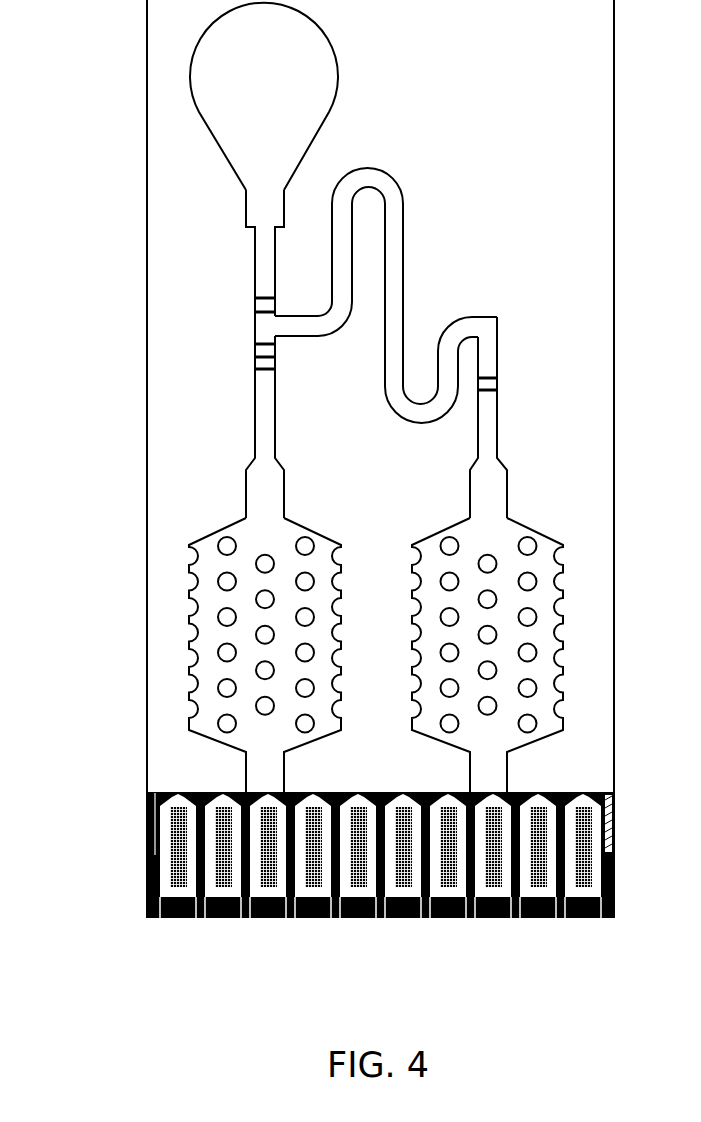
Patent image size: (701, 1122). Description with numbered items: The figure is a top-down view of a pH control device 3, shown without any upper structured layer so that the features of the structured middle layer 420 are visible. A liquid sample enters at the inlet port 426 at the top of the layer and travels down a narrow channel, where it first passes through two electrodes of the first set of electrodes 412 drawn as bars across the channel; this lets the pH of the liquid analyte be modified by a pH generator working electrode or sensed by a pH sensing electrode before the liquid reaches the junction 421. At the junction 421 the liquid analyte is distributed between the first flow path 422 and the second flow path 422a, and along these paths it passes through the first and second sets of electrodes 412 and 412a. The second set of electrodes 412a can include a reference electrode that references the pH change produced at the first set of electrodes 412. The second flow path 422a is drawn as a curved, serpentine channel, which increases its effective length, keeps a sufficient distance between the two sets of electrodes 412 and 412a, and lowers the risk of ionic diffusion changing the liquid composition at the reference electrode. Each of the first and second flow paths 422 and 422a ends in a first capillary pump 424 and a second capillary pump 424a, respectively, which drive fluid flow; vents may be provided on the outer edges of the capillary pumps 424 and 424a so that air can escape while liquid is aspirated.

The pH control device 3 is at (156, 970).
The structured middle layer 420 is at (157, 692).
The inlet port 426 is at (210, 101).
The first set of electrodes 412 is at (250, 290).
The second set of electrodes 412a is at (498, 368).
The junction 421 is at (270, 323).
The first flow path 422 is at (267, 415).
The second flow path 422a is at (485, 415).
The first capillary pump 424 is at (332, 722).
The second capillary pump 424a is at (547, 723).